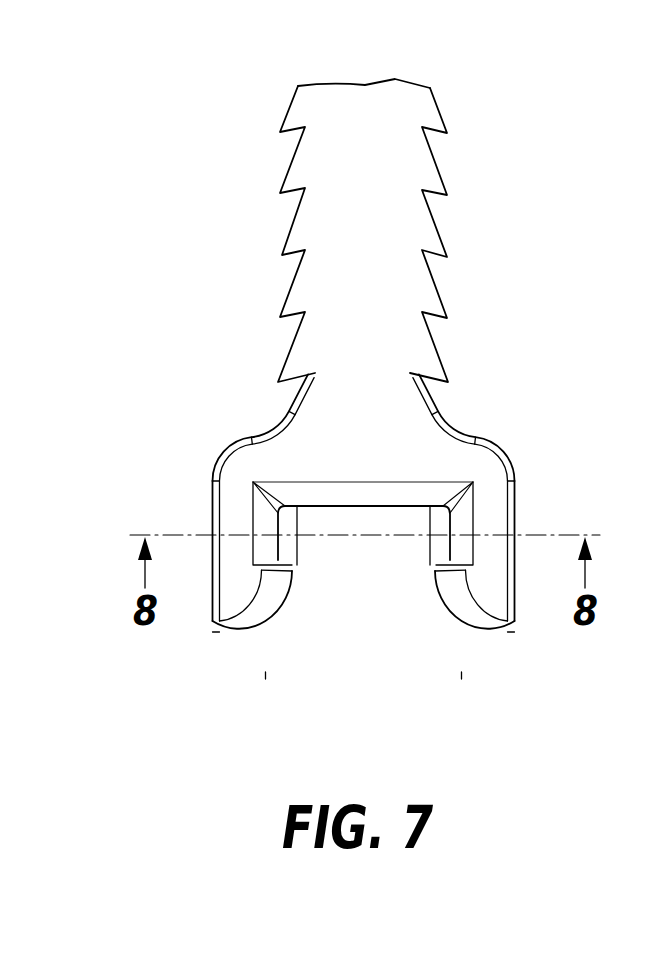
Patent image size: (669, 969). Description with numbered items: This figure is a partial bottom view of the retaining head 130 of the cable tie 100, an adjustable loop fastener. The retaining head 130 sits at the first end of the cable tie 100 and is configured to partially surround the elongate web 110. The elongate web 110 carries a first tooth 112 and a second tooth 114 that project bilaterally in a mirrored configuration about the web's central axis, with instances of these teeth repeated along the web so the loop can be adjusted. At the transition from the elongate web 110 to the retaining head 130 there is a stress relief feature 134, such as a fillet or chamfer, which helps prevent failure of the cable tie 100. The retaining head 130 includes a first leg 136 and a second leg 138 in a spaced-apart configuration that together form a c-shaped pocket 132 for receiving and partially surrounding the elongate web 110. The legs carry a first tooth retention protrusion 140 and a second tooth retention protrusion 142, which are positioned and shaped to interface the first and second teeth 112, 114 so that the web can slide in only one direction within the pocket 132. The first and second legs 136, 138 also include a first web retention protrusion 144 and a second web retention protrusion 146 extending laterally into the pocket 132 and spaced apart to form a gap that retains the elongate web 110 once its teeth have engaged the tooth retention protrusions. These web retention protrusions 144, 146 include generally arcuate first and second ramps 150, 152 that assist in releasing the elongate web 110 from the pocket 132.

The cable tie 100 is at (184, 147).
The elongate web 110 is at (330, 160).
The first tooth 112 is at (440, 232).
The second tooth 114 is at (290, 215).
The retaining head 130 is at (212, 518).
The pocket 132 is at (354, 620).
The stress relief feature 134 is at (276, 428).
The first leg 136 is at (261, 680).
The second leg 138 is at (466, 680).
The first tooth retention protrusion 140 is at (298, 548).
The second tooth retention protrusion 142 is at (430, 548).
The first web retention protrusion 144 is at (272, 622).
The second web retention protrusion 146 is at (455, 622).
The first ramp 150 is at (304, 580).
The second ramp 152 is at (413, 598).